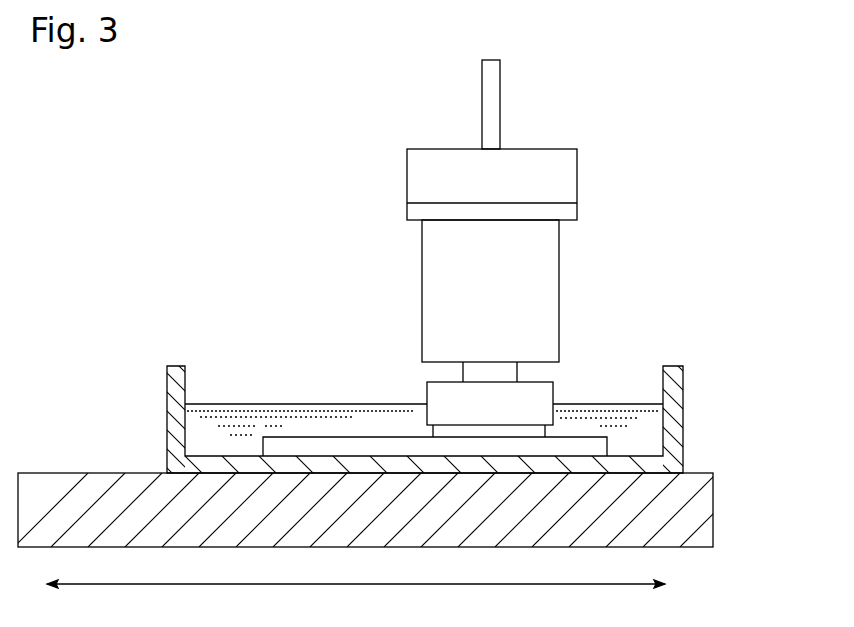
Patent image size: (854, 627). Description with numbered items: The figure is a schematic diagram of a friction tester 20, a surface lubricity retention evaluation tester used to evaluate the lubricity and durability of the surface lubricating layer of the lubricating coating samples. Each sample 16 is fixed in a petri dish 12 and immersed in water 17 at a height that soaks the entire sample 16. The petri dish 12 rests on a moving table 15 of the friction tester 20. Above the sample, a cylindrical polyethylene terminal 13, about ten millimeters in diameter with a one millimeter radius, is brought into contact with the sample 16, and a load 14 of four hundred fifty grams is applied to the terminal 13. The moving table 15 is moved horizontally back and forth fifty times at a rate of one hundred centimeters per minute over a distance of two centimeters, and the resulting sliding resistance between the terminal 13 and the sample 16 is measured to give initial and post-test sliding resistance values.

The petri dish 12 is at (683, 385).
The cylindrical polyethylene terminal 13 is at (547, 430).
The load 14 is at (572, 178).
The moving table 15 is at (63, 473).
The sample 16 is at (297, 443).
The water 17 is at (383, 418).
The friction tester 20 is at (123, 143).